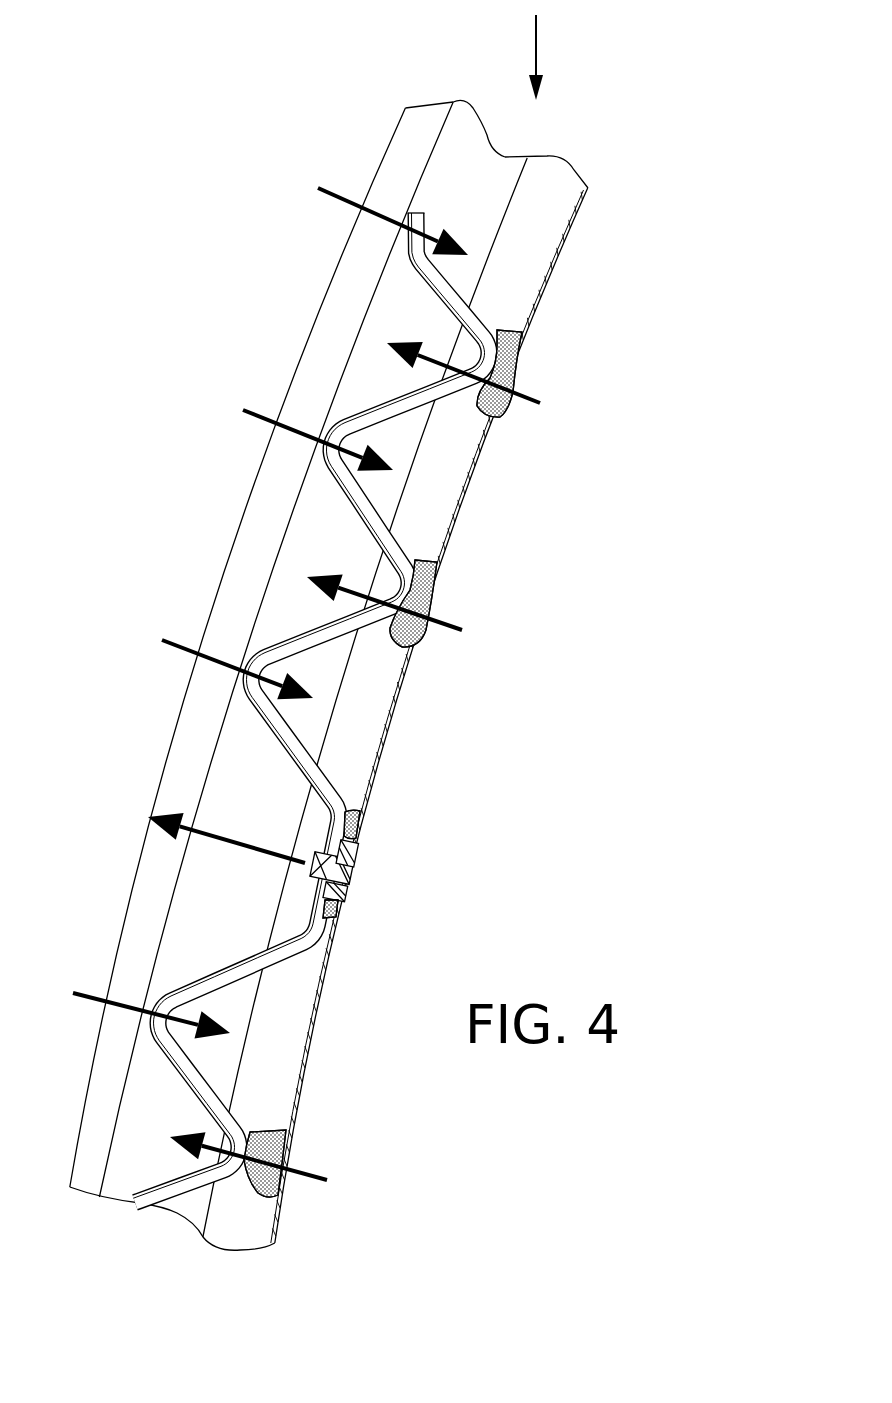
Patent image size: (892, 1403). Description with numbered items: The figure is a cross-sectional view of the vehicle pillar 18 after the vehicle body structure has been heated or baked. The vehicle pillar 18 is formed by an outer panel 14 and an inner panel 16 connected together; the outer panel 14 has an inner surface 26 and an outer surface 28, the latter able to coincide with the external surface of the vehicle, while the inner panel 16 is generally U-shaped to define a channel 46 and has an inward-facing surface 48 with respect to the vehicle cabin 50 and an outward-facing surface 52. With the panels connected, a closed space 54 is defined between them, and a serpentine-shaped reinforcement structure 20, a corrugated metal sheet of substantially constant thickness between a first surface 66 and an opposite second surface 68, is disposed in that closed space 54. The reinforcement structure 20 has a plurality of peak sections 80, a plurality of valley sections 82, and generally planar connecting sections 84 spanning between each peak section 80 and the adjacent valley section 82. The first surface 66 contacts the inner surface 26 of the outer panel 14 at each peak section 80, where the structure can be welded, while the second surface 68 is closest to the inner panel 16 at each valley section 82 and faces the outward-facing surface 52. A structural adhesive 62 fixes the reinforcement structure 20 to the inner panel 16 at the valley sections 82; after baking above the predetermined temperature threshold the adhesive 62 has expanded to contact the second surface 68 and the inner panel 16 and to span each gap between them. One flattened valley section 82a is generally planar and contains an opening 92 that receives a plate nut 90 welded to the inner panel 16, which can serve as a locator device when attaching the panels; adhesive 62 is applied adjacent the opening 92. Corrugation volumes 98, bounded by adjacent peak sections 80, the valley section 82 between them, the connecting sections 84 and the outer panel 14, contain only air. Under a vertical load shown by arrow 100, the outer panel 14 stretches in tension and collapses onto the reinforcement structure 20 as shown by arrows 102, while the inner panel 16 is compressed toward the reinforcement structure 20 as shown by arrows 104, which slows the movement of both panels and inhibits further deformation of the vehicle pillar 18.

The outer panel 14 is at (398, 137).
The inner panel 16 is at (570, 242).
The vehicle pillar 18 is at (240, 218).
The serpentine-shaped reinforcement structure 20 is at (404, 529).
The inner surface 26 is at (462, 107).
The outer surface 28 is at (336, 273).
The channel 46 is at (522, 220).
The inward-facing surface 48 is at (532, 320).
The vehicle cabin 50 is at (681, 508).
The outward-facing surface 52 is at (574, 188).
The closed space 54 is at (308, 555).
The structural adhesive 62 is at (521, 338).
The first surface 66 is at (183, 1083).
The second surface 68 is at (200, 1077).
The peak section 80 is at (326, 465).
The valley section 82 is at (417, 559).
The flattened valley section 82a is at (347, 807).
The connecting section 84 is at (353, 512).
The plate nut 90 is at (350, 892).
The opening 92 is at (313, 878).
The corrugation volume 98 is at (389, 320).
The arrow 100 is at (537, 37).
The arrows 102 is at (338, 190).
The arrows 104 is at (521, 403).